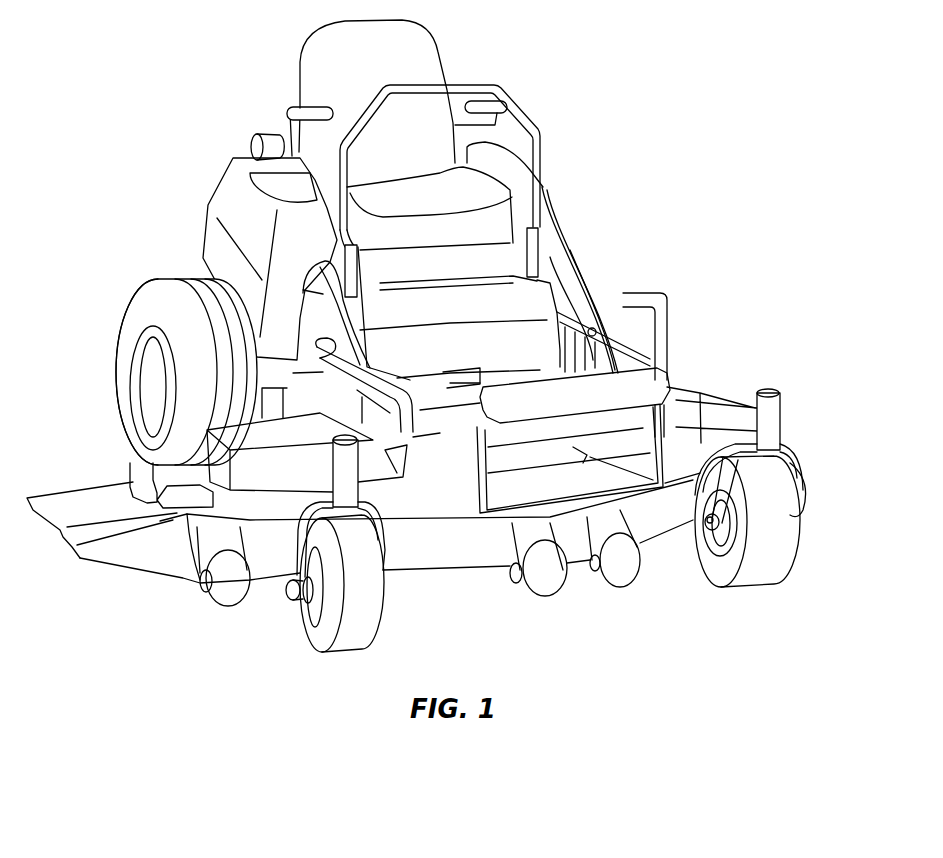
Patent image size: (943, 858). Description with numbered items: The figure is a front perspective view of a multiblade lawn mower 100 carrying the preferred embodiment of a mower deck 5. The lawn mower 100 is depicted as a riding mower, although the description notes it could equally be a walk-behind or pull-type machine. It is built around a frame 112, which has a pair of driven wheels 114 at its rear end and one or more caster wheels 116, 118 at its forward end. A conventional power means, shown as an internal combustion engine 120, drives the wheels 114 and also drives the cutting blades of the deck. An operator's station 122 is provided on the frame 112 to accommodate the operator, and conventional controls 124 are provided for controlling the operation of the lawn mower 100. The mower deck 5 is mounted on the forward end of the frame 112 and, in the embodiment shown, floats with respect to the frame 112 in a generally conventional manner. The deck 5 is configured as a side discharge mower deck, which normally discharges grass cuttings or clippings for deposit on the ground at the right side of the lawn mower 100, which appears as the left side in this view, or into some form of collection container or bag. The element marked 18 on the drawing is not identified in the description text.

The lawn mower 100 is at (448, 336).
The frame 112 is at (576, 241).
The driven wheels 114 is at (130, 318).
The caster wheel 116 is at (790, 553).
The caster wheel 118 is at (367, 610).
The internal combustion engine 120 is at (243, 148).
The operator's station 122 is at (410, 52).
The controls 124 is at (528, 113).
The collection bin 18 is at (480, 515).
The mower deck 5 is at (649, 520).